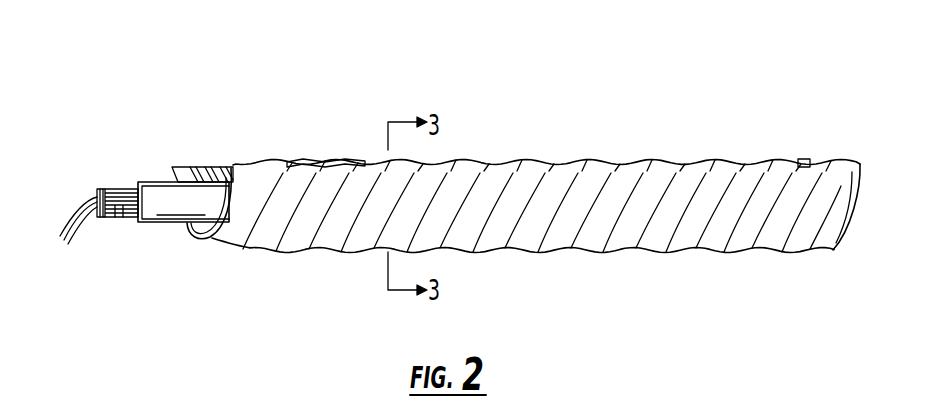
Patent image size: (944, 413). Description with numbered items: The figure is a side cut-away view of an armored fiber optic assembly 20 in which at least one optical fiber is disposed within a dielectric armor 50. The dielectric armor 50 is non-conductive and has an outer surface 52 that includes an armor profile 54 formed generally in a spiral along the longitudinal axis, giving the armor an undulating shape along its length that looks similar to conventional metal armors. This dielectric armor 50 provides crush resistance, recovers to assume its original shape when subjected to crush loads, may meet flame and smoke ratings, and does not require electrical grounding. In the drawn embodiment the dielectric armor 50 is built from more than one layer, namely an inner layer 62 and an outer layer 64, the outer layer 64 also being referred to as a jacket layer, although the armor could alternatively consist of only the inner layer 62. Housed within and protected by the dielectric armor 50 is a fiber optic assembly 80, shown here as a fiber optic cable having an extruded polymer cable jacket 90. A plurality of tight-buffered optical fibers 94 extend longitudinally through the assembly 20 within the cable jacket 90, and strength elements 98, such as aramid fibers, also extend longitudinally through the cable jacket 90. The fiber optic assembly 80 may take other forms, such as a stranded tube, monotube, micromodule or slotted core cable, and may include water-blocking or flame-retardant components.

The armored fiber optic assembly 20 is at (523, 197).
The dielectric armor 50 is at (280, 106).
The outer surface 52 is at (648, 254).
The armor profile 54 is at (658, 158).
The inner layer 62 is at (220, 166).
The outer layer 64 is at (326, 120).
The fiber optic assembly 80 is at (135, 211).
The cable jacket 90 is at (173, 207).
The tight-buffered optical fibers 94 is at (69, 233).
The strength elements 98 is at (128, 213).